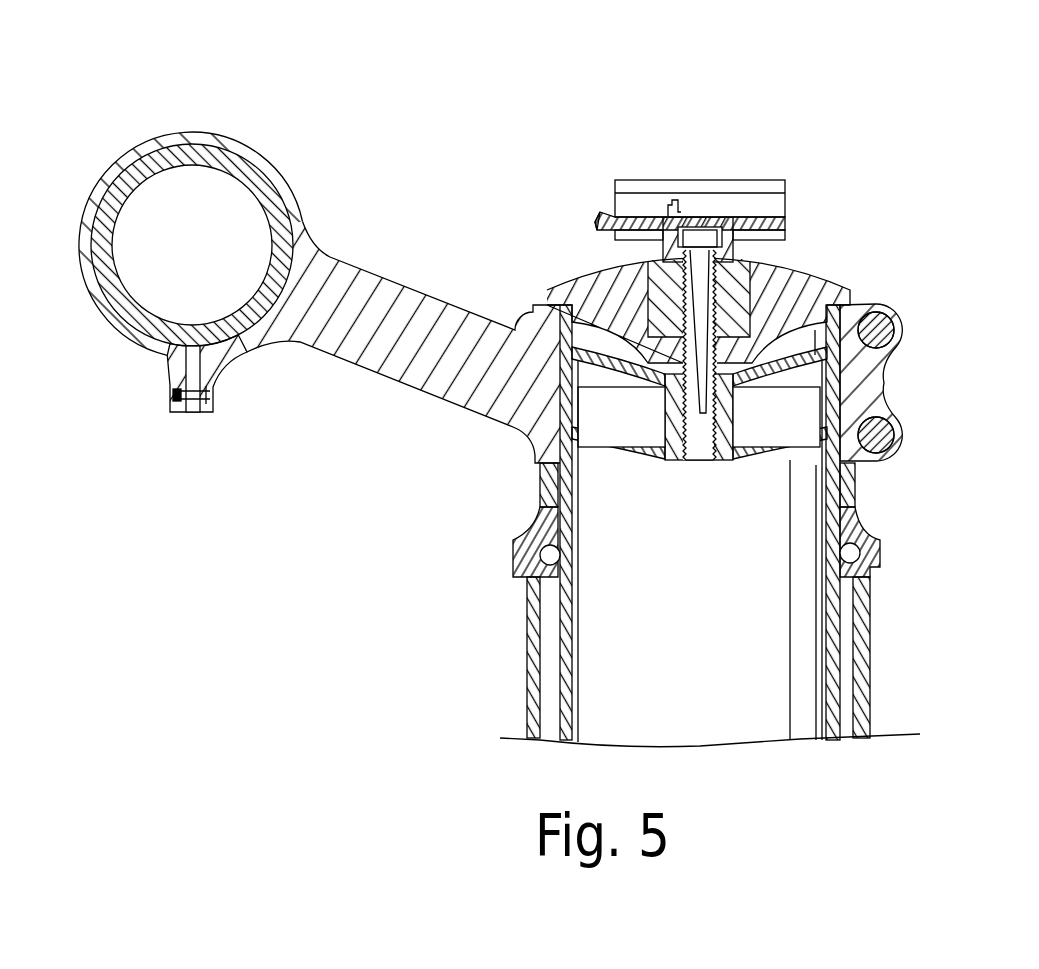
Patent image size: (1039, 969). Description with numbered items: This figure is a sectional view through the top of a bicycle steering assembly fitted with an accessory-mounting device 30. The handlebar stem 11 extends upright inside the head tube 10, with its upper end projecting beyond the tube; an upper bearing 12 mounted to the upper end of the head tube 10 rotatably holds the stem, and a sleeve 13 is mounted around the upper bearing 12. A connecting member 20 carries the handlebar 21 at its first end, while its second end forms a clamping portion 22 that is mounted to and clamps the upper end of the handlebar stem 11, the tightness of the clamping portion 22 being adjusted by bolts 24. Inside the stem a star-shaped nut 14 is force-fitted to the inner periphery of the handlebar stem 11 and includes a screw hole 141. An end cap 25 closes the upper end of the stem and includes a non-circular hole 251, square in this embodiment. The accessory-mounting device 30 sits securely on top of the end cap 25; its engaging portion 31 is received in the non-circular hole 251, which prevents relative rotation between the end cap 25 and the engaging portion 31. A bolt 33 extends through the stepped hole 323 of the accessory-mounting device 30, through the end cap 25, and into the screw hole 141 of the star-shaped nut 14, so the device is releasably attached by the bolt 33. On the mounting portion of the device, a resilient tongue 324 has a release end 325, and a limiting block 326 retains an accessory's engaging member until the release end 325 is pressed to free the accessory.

The head tube 10 is at (875, 660).
The handlebar stem 11 is at (832, 742).
The upper bearing 12 is at (883, 552).
The sleeve 13 is at (855, 483).
The star-shaped nut 14 is at (603, 367).
The screw hole 141 is at (690, 460).
The connecting member 20 is at (405, 283).
The handlebar 21 is at (210, 157).
The clamping portion 22 is at (865, 380).
The bolts 24 is at (886, 304).
The end cap 25 is at (820, 272).
The non-circular hole 251 is at (735, 262).
The accessory-mounting device 30 is at (750, 176).
The engaging portion 31 is at (663, 293).
The hole 323 is at (687, 222).
The resilient tongue 324 is at (612, 205).
The release end 325 is at (595, 215).
The limiting block 326 is at (637, 213).
The bolt 33 is at (712, 225).